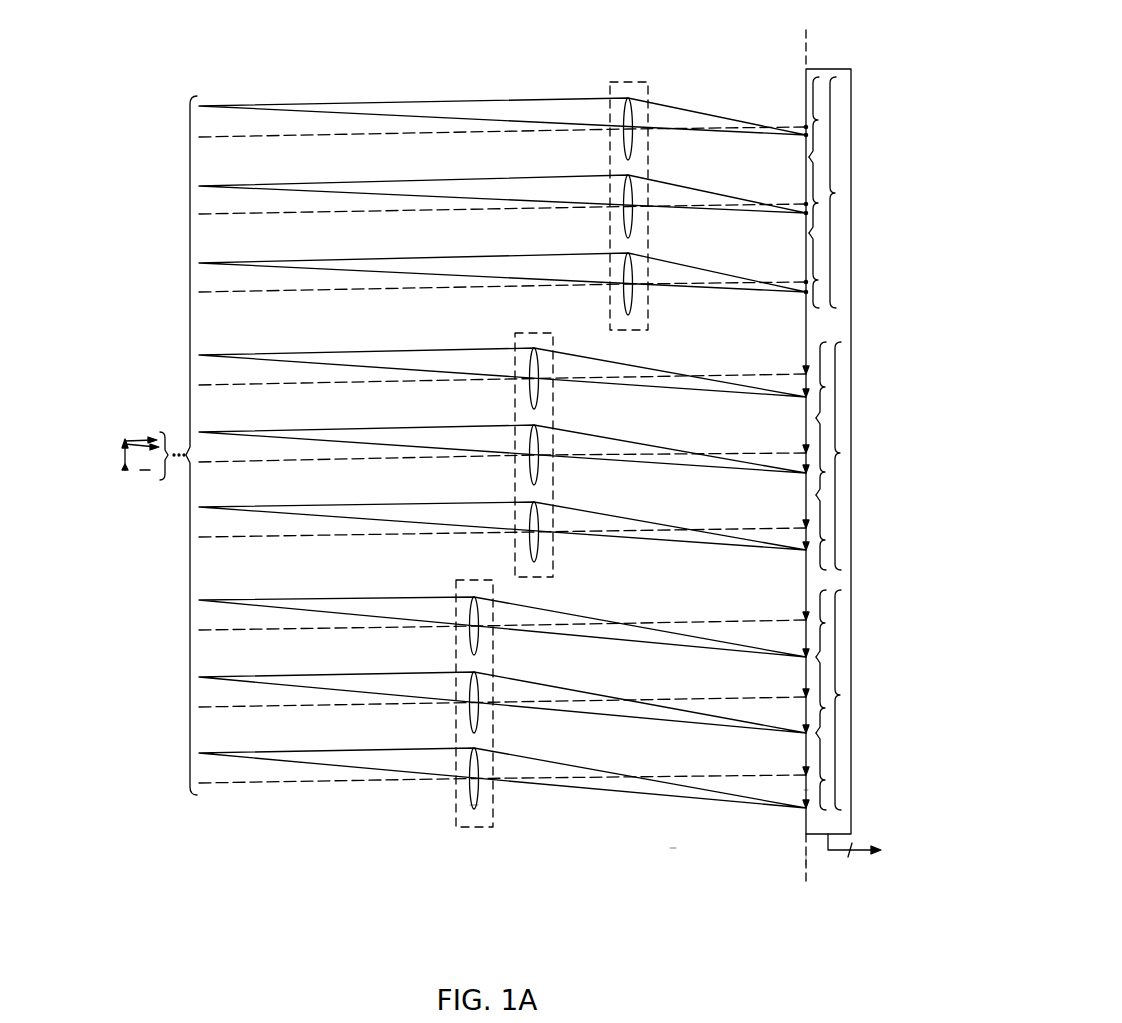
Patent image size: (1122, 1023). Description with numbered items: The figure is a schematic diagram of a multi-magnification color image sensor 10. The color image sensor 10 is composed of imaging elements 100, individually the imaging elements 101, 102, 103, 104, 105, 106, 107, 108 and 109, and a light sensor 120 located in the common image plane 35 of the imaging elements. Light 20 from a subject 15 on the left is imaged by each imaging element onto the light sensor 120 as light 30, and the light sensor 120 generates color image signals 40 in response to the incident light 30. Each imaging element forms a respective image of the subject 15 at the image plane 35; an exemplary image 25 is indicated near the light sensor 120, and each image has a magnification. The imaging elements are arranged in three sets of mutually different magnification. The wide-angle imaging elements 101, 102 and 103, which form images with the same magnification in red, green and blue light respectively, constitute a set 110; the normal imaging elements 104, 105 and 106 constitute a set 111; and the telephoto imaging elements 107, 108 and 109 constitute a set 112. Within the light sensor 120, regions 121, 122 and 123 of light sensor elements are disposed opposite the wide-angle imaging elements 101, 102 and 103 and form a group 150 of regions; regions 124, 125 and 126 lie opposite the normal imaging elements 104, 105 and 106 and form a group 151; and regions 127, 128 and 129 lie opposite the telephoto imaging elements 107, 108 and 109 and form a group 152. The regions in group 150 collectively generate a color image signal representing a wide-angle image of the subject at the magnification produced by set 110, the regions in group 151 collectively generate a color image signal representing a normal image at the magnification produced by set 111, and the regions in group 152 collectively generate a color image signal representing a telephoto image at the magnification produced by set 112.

The multi-magnification color image sensor 10 is at (705, 592).
The subject 15 is at (123, 458).
The light 20 is at (147, 438).
The image 25 is at (805, 794).
The light 30 is at (671, 848).
The image plane 35 is at (802, 860).
The color image signals 40 is at (830, 852).
The imaging elements 100 is at (474, 812).
The wide-angle imaging element 101 is at (623, 118).
The wide-angle imaging element 102 is at (623, 196).
The wide-angle imaging element 103 is at (623, 272).
The normal imaging element 104 is at (528, 366).
The normal imaging element 105 is at (528, 443).
The normal imaging element 106 is at (528, 518).
The telephoto imaging element 107 is at (468, 616).
The telephoto imaging element 108 is at (468, 692).
The telephoto imaging element 109 is at (468, 768).
The set of wide-angle imaging elements 110 is at (650, 92).
The set of normal imaging elements 111 is at (553, 566).
The set of telephoto imaging elements 112 is at (493, 812).
The light sensor 120 is at (818, 67).
The region of light sensor elements 121 is at (818, 120).
The region of light sensor elements 122 is at (818, 203).
The region of light sensor elements 123 is at (818, 280).
The region of light sensor elements 124 is at (825, 387).
The region of light sensor elements 125 is at (825, 472).
The region of light sensor elements 126 is at (825, 540).
The region of light sensor elements 127 is at (825, 623).
The region of light sensor elements 128 is at (825, 708).
The region of light sensor elements 129 is at (825, 780).
The group of regions 150 is at (835, 193).
The group of regions 151 is at (840, 453).
The group of regions 152 is at (840, 695).